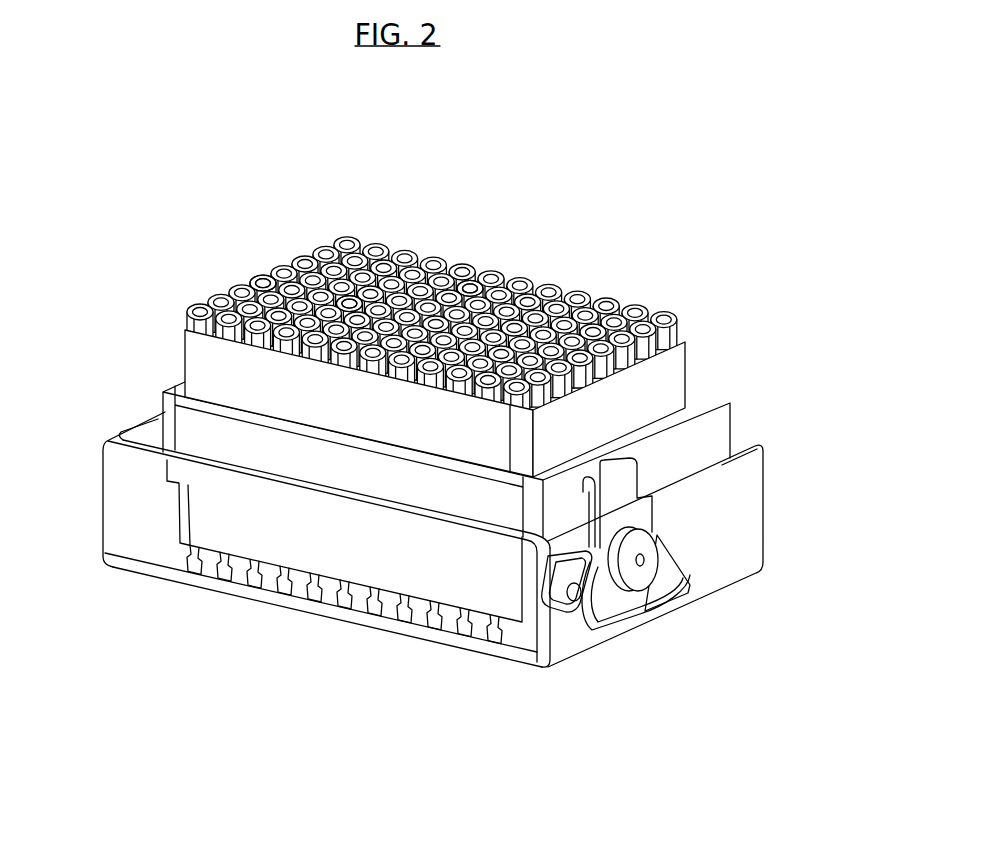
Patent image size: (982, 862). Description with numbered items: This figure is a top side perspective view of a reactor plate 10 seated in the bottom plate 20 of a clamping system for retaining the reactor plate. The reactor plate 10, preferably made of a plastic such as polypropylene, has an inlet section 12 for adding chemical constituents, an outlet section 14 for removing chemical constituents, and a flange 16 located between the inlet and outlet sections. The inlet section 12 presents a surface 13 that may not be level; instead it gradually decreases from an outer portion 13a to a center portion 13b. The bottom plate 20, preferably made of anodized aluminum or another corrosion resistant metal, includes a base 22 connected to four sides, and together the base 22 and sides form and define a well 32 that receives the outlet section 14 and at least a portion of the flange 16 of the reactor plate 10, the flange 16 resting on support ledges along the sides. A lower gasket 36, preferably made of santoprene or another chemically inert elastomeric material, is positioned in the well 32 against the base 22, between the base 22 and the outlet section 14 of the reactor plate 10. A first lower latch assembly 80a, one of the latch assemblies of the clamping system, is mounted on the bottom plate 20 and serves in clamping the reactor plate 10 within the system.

The reactor plate 10 is at (453, 452).
The inlet section 12 is at (545, 282).
The surface 13 is at (355, 302).
The outer portion 13a is at (268, 282).
The center portion 13b is at (460, 285).
The outlet section 14 is at (395, 600).
The flange 16 is at (720, 432).
The bottom plate 20 is at (727, 563).
The base 22 is at (497, 652).
The well 32 is at (137, 503).
The lower gasket 36 is at (168, 568).
The first lower latch assembly 80a is at (612, 616).